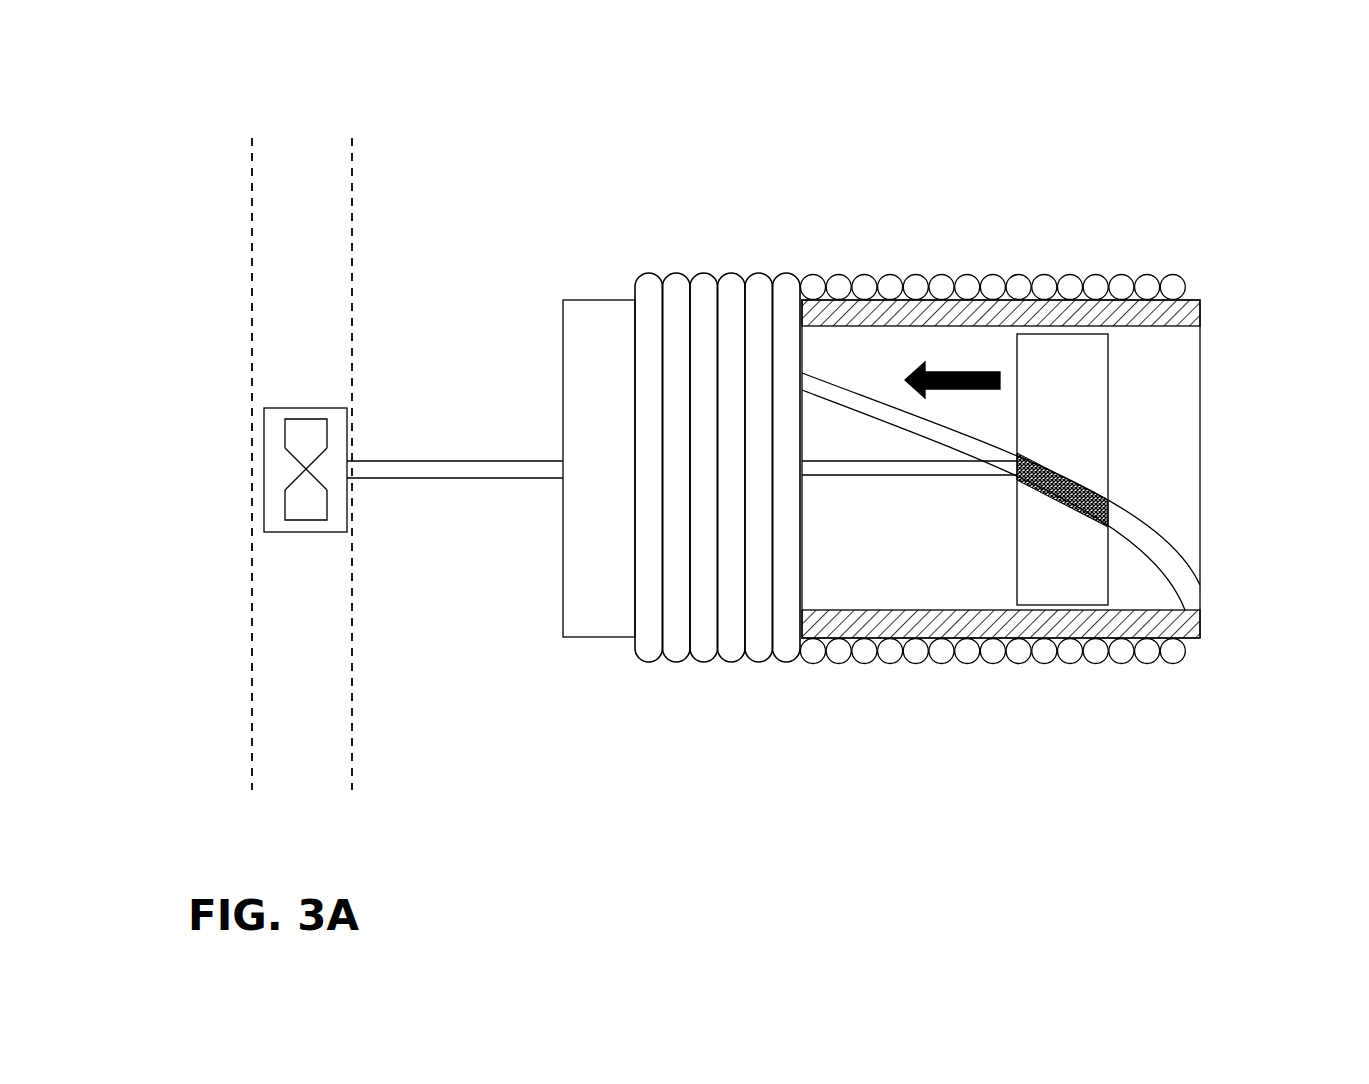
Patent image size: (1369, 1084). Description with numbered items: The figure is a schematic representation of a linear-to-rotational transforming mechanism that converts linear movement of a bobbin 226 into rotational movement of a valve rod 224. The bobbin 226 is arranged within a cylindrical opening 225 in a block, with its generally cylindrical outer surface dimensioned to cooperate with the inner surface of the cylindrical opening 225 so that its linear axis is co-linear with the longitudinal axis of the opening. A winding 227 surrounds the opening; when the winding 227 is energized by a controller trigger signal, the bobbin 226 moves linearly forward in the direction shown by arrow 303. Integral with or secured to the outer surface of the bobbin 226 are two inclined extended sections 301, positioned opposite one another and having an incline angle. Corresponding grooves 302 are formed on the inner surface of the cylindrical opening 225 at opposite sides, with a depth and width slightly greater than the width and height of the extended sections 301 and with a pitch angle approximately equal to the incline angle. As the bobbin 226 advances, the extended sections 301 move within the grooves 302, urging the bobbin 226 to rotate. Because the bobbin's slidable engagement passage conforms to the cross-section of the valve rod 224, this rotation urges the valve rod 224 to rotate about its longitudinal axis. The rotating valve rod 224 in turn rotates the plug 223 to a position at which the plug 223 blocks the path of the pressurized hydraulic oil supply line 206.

The pressurized hydraulic oil supply line 206 is at (252, 658).
The plug 223 is at (264, 424).
The valve rod 224 is at (515, 458).
The cylindrical opening 225 is at (597, 300).
The bobbin 226 is at (1108, 437).
The winding 227 is at (732, 660).
The inclined extended sections 301 is at (1020, 500).
The grooves 302 is at (1183, 557).
The arrow 303 is at (958, 370).